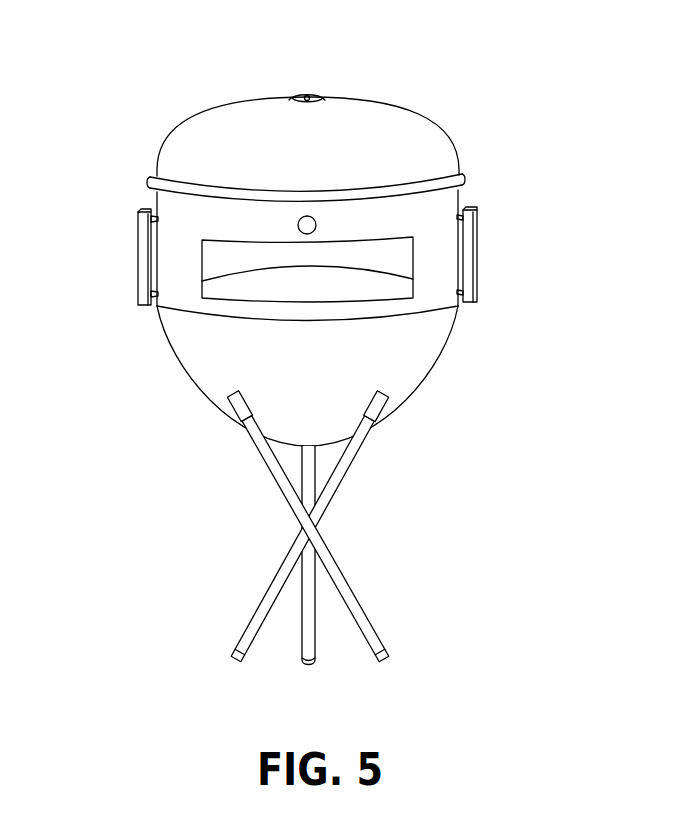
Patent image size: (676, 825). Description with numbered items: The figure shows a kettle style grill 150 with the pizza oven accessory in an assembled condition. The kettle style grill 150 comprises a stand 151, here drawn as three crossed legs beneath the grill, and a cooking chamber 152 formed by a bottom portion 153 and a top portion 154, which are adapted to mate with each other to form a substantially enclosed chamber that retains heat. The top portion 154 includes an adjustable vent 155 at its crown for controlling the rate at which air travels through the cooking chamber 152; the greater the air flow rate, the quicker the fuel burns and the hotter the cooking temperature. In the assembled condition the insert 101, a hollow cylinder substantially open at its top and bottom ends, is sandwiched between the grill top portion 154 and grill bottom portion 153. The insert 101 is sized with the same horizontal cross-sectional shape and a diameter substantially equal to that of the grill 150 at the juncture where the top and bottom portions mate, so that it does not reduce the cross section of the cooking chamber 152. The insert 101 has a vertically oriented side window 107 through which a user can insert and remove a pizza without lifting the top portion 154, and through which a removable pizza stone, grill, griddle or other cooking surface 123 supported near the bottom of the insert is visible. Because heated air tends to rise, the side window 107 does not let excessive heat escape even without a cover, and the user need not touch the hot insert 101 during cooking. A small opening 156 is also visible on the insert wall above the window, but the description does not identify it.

The insert 101 is at (440, 243).
The side window 107 is at (317, 296).
The cooking surface 123 is at (240, 285).
The kettle style grill 150 is at (235, 452).
The stand 151 is at (310, 526).
The cooking chamber 152 is at (212, 268).
The bottom portion 153 is at (437, 362).
The top portion 154 is at (418, 128).
The adjustable vent 155 is at (319, 96).
The thermometer hole 156 is at (309, 225).